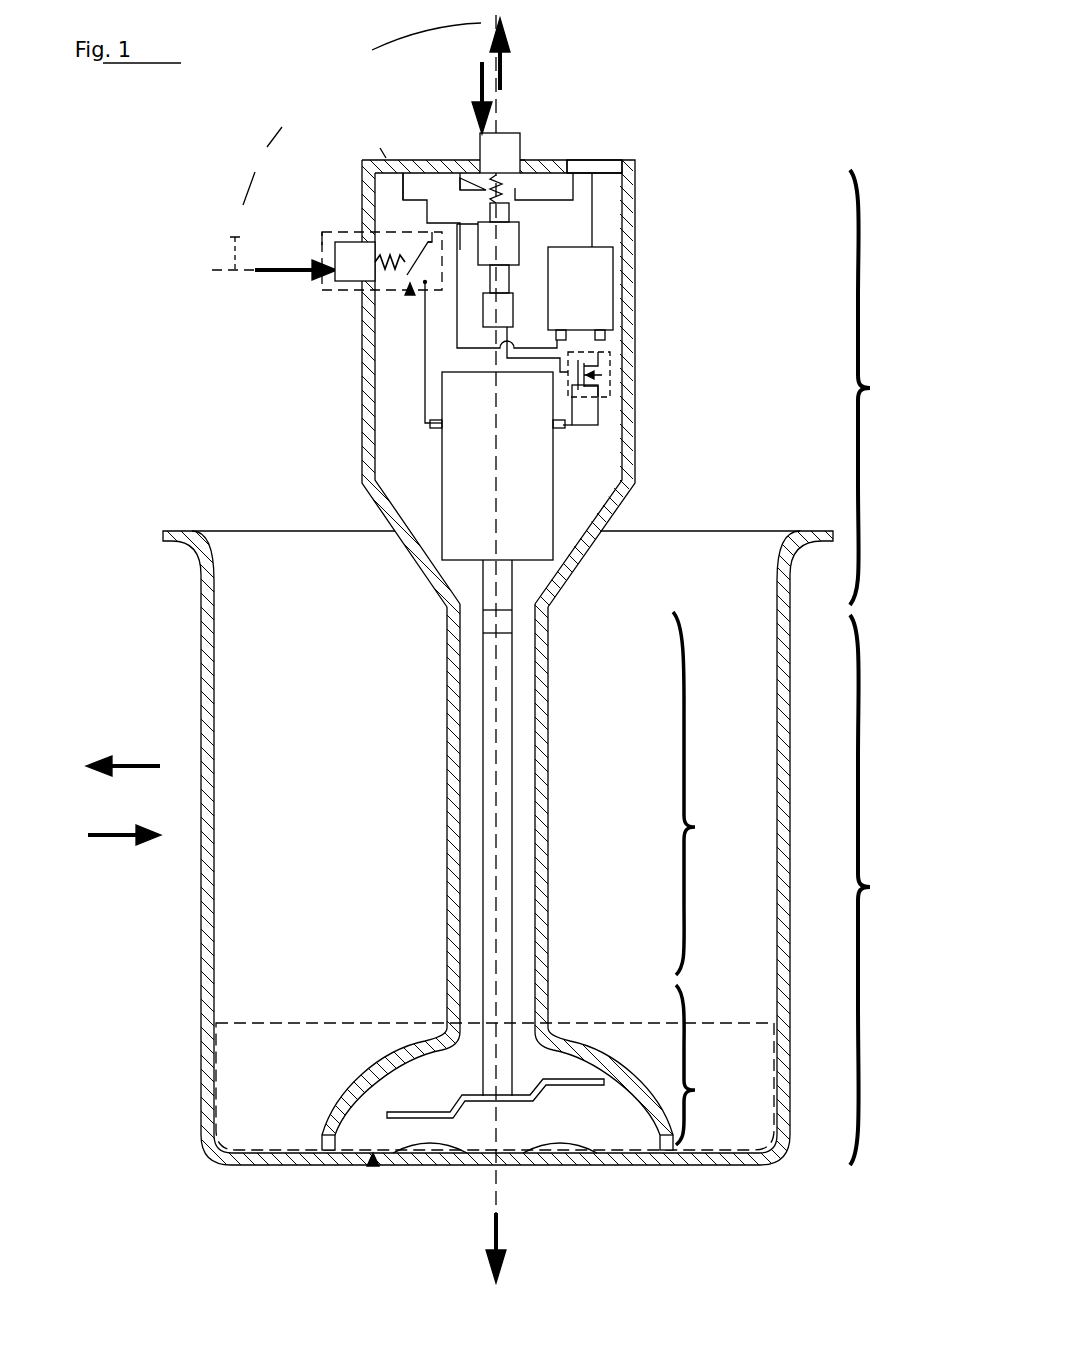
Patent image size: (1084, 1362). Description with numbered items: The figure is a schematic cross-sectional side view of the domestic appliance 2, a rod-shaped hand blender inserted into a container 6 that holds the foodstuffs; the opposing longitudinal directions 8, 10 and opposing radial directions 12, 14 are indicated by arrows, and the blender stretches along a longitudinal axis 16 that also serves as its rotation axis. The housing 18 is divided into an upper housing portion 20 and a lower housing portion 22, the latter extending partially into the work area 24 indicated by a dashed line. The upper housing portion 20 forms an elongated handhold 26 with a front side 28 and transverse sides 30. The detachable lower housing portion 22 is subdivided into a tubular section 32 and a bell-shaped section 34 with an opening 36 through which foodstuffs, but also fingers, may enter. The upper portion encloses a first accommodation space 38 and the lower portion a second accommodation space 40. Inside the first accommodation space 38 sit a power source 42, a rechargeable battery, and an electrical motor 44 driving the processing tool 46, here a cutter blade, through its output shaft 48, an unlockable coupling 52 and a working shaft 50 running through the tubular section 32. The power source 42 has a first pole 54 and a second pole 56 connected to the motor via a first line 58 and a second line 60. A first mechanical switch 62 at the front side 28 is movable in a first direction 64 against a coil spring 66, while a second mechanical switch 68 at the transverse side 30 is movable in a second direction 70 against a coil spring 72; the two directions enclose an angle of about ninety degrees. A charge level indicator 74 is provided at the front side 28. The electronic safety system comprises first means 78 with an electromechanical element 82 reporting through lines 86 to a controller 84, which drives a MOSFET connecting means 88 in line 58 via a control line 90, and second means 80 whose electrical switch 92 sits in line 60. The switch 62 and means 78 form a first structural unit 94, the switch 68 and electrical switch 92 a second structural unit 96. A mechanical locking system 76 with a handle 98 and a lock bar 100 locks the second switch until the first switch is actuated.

The domestic appliance 2 is at (735, 167).
The container 6 is at (786, 878).
The longitudinal direction 8 is at (504, 70).
The longitudinal direction 10 is at (487, 1237).
The radial direction 12 is at (132, 762).
The radial direction 14 is at (108, 838).
The longitudinal axis 16 is at (490, 1175).
The housing 18 is at (345, 156).
The upper housing portion 20 is at (879, 387).
The lower housing portion 22 is at (875, 890).
The work area 24 is at (248, 1023).
The handhold 26 is at (733, 480).
The front side 28 is at (382, 148).
The transverse side 30 is at (648, 233).
The tubular section 32 is at (700, 793).
The bell-shaped section 34 is at (701, 1065).
The opening 36 is at (373, 1165).
The first accommodation space 38 is at (396, 478).
The second accommodation space 40 is at (535, 778).
The power source 42 is at (566, 305).
The electrical motor 44 is at (510, 485).
The processing tool 46 is at (558, 1092).
The output shaft 48 is at (485, 583).
The working shaft 50 is at (486, 748).
The coupling 52 is at (488, 625).
The first pole 54 is at (605, 335).
The second pole 56 is at (578, 332).
The first line 58 is at (600, 422).
The second line 60 is at (425, 402).
The first mechanical switch 62 is at (513, 145).
The first direction 64 is at (478, 87).
The coil spring 66 is at (505, 183).
The second mechanical switch 68 is at (347, 248).
The second direction 70 is at (288, 275).
The coil spring 72 is at (365, 292).
The charge level indicator 74 is at (640, 166).
The mechanical locking system 76 is at (405, 168).
The first means for detecting the position of the first mechanical switch 78 is at (530, 259).
The second means for detecting the position of the second mechanical switch 80 is at (410, 293).
The electromechanical element 82 is at (508, 217).
The controller 84 is at (490, 325).
The lines 86 is at (491, 293).
The connecting means 88 is at (620, 394).
The control line 90 is at (507, 355).
The electrical switch 92 is at (417, 250).
The first structural unit 94 is at (522, 124).
The second structural unit 96 is at (320, 238).
The handle 98 is at (472, 167).
The lock bar 100 is at (480, 266).